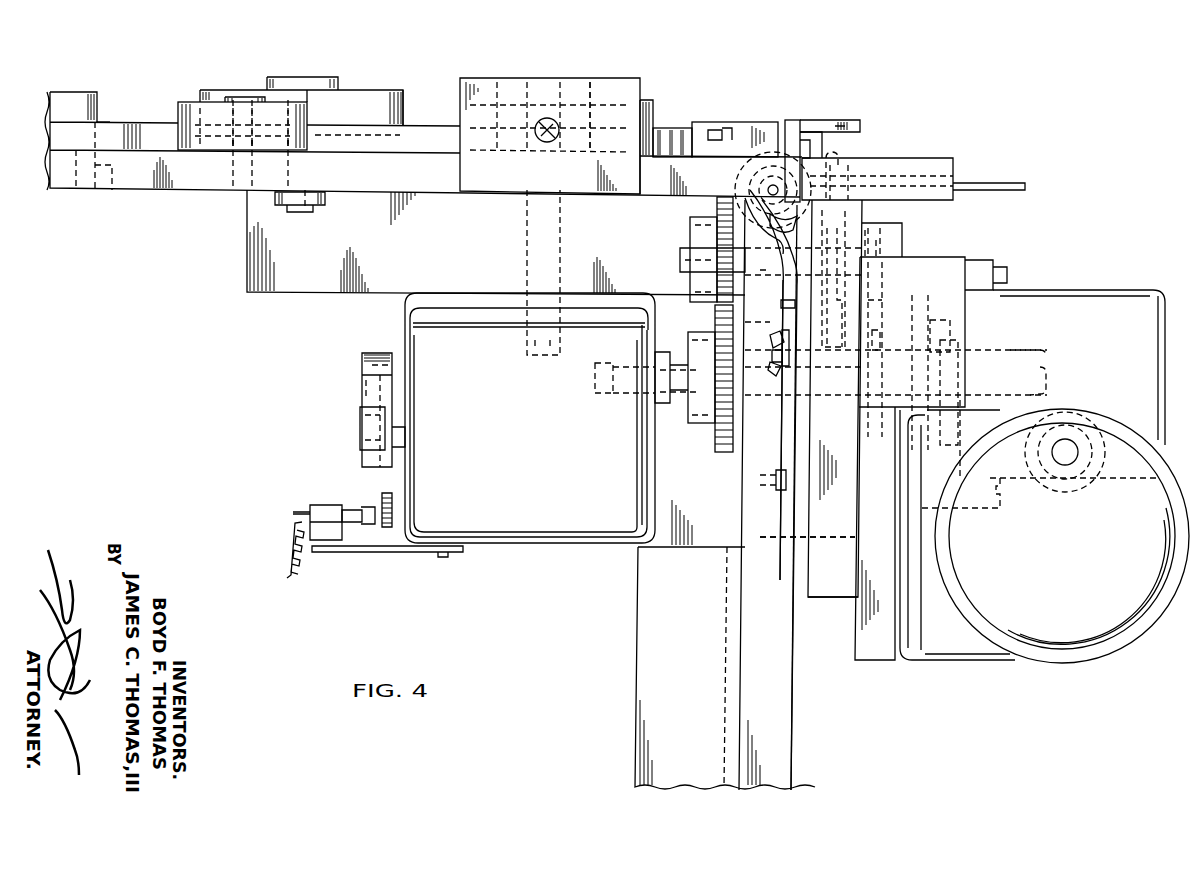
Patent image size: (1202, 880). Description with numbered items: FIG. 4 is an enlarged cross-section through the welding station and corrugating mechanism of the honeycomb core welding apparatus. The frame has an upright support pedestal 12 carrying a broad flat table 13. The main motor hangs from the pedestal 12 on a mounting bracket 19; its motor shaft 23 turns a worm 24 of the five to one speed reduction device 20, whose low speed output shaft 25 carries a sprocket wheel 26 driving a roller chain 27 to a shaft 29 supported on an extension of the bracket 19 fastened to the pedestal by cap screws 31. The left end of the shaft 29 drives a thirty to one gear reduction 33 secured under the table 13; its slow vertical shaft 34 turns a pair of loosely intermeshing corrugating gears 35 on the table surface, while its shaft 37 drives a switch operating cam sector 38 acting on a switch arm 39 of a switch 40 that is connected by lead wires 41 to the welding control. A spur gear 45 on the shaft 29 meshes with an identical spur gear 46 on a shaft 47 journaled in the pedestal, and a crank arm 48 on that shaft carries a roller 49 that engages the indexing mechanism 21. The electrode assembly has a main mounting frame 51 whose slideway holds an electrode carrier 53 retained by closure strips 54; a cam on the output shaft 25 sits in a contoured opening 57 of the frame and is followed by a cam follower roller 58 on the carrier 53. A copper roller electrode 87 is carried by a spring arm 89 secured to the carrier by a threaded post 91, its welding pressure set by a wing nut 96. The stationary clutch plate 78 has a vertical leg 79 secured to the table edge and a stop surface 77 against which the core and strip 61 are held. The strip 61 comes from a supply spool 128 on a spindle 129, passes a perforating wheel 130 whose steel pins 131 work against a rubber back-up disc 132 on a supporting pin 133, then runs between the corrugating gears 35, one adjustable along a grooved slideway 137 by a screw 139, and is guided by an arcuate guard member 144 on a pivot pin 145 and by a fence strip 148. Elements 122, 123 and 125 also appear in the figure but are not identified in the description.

The upright support pedestal 12 is at (672, 632).
The table top 13 is at (928, 158).
The mounting bracket 19 is at (870, 658).
The speed reduction device 20 is at (1102, 318).
The indexing mechanism 21 is at (872, 224).
The motor shaft 23 is at (1064, 442).
The worm 24 is at (1098, 452).
The low speed output shaft 25 is at (1039, 368).
The sprocket wheel 26 is at (953, 345).
The roller chain 27 is at (953, 330).
The shaft 29 is at (612, 392).
The cap screws 31 is at (1008, 280).
The gear reduction 33 is at (586, 523).
The vertical shaft 34 is at (552, 86).
The corrugating gears 35 is at (658, 120).
The shaft 37 is at (384, 460).
The switch operating cam sector 38 is at (368, 346).
The switch arm 39 is at (354, 522).
The switch 40 is at (324, 506).
The lead wires 41 is at (298, 564).
The spur gear 45 is at (716, 452).
The spur gear 46 is at (716, 210).
The shaft 47 is at (681, 270).
The crank arm 48 is at (874, 240).
The roller 49 is at (855, 348).
The main mounting frame 51 is at (830, 596).
The electrode carrier 53 is at (792, 538).
The closure strips 54 is at (794, 568).
The contoured opening 57 is at (880, 349).
The cam follower roller 58 is at (881, 327).
The strip 61 is at (156, 122).
The stop surface 77 is at (854, 142).
The stationary clutch plate 78 is at (864, 114).
The vertical leg 79 is at (798, 136).
The roller electrode 87 is at (773, 471).
The spring arm 89 is at (792, 322).
The threaded post 91 is at (778, 480).
The wing nut 96 is at (791, 370).
The pin 122 is at (848, 160).
The rod 123 is at (996, 186).
The hub 125 is at (360, 420).
The supply spool 128 is at (108, 122).
The spindle 129 is at (115, 188).
The wheel 130 is at (207, 98).
The steel pins 131 is at (178, 124).
The rubber back-up disc 132 is at (368, 90).
The supporting pin 133 is at (285, 174).
The grooved slideway 137 is at (588, 102).
The screw 139 is at (538, 114).
The arcuate guard member 144 is at (748, 122).
The pivot pin 145 is at (714, 130).
The fence strip 148 is at (828, 132).